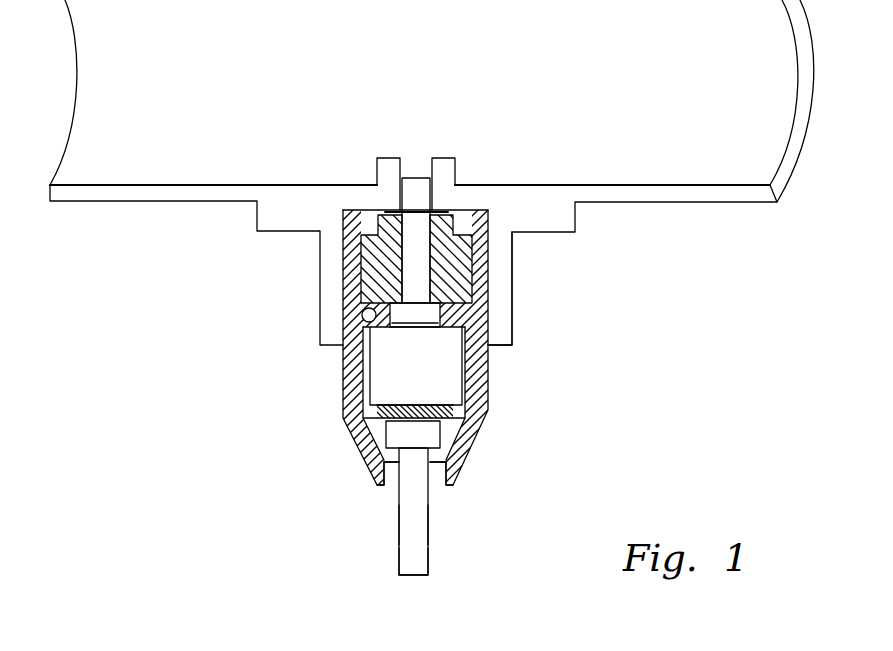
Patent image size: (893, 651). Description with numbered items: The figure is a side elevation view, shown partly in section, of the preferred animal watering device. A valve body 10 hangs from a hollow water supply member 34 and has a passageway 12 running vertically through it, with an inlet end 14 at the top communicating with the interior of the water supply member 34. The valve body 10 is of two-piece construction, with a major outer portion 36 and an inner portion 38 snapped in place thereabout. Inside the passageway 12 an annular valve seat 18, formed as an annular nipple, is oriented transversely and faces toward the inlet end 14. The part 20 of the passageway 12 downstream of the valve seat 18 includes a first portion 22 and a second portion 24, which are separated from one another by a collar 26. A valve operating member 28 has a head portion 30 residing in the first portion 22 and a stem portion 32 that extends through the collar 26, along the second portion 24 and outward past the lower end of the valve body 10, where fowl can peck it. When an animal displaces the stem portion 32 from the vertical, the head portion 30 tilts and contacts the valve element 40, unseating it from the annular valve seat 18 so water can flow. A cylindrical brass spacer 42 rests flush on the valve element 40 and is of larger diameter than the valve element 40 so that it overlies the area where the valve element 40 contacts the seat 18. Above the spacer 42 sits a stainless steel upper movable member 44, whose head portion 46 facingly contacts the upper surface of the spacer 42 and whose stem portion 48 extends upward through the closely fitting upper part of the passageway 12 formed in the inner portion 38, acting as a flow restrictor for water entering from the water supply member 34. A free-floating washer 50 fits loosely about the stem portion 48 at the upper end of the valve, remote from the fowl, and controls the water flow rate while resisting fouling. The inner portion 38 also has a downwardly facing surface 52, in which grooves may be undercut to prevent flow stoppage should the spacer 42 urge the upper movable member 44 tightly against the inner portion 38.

The valve body 10 is at (492, 434).
The passageway 12 is at (492, 320).
The inlet end 14 is at (415, 158).
The annular valve seat 18 is at (458, 432).
The downstream part of passageway 20 is at (383, 456).
The first portion 22 is at (380, 453).
The second portion 24 is at (397, 478).
The collar 26 is at (448, 455).
The valve operating member 28 is at (430, 524).
The head portion 30 is at (400, 436).
The stem portion 32 is at (415, 560).
The water supply member 34 is at (300, 97).
The outer portion 36 is at (492, 366).
The inner portion 38 is at (377, 275).
The valve element 40 is at (382, 411).
The spacer 42 is at (435, 380).
The upper movable member 44 is at (440, 259).
The head portion 46 is at (432, 317).
The stem portion 48 is at (402, 224).
The free-floating washer 50 is at (448, 212).
The downwardly facing surface 52 is at (360, 316).